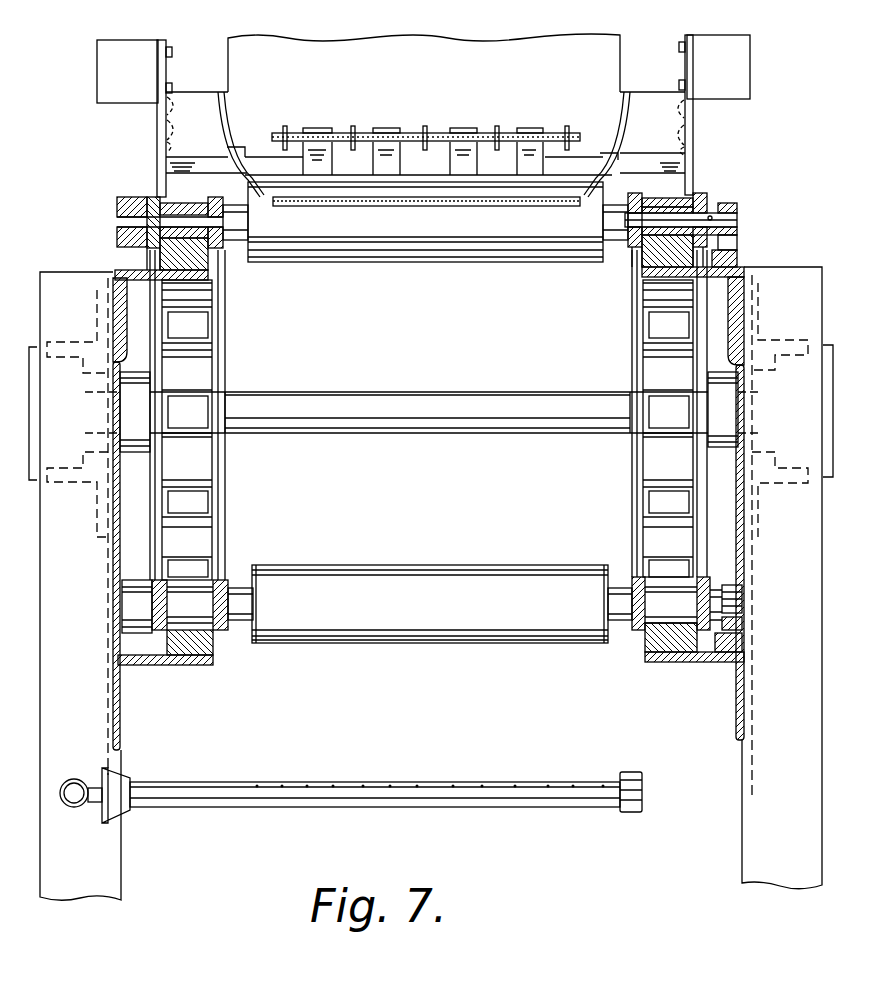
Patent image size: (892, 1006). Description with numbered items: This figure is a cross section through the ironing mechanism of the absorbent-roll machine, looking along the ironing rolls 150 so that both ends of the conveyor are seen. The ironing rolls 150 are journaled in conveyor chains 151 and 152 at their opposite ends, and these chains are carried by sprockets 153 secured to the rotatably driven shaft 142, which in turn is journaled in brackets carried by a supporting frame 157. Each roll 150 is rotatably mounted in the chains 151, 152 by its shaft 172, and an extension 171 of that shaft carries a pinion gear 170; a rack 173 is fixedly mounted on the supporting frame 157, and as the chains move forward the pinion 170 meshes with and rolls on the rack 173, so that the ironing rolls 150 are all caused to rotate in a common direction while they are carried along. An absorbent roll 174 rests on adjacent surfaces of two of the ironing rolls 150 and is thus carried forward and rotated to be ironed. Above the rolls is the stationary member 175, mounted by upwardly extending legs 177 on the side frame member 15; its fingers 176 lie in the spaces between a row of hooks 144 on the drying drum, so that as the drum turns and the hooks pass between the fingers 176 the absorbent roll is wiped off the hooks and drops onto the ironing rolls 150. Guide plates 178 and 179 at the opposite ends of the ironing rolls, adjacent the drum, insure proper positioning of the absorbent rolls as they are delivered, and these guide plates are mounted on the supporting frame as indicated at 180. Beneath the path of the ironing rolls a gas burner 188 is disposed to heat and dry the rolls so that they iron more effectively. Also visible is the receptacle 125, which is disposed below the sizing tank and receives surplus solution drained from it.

The side frame member 15 is at (100, 74).
The receptacle 125 is at (437, 137).
The rotatably driven shaft 142 is at (462, 407).
The row of hooks 144 is at (567, 130).
The roll 150 is at (528, 253).
The conveyor chain 151 is at (152, 197).
The conveyor chain 152 is at (700, 193).
The sprocket 153 is at (647, 355).
The supporting frame 157 is at (103, 857).
The pinion gear 170 is at (727, 202).
The extension 171 is at (738, 220).
The shaft 172 is at (628, 233).
The rack 173 is at (738, 247).
The absorbent roll 174 is at (360, 207).
The member 175 is at (200, 177).
The finger 176 is at (387, 127).
The leg 177 is at (163, 122).
The guide plate 178 is at (242, 165).
The guide plate 179 is at (607, 160).
The guide plate mounting 180 is at (668, 125).
The gas burner 188 is at (392, 798).